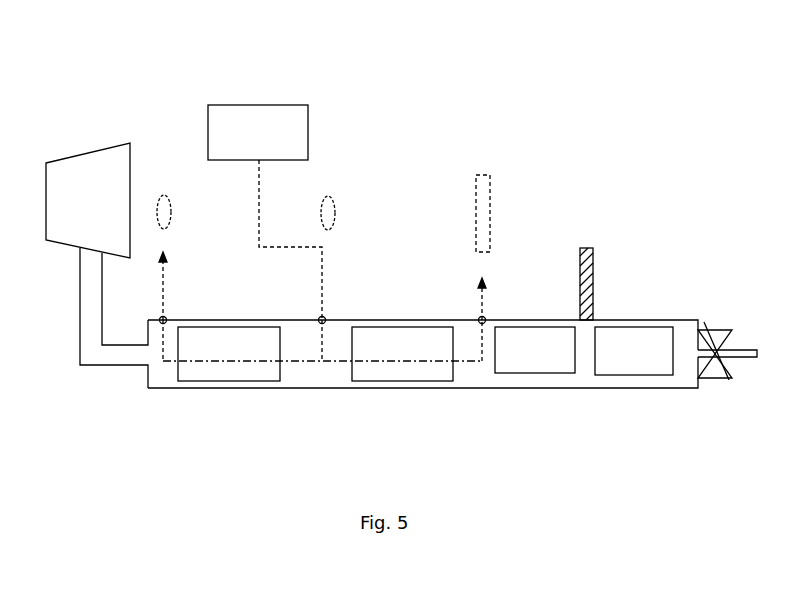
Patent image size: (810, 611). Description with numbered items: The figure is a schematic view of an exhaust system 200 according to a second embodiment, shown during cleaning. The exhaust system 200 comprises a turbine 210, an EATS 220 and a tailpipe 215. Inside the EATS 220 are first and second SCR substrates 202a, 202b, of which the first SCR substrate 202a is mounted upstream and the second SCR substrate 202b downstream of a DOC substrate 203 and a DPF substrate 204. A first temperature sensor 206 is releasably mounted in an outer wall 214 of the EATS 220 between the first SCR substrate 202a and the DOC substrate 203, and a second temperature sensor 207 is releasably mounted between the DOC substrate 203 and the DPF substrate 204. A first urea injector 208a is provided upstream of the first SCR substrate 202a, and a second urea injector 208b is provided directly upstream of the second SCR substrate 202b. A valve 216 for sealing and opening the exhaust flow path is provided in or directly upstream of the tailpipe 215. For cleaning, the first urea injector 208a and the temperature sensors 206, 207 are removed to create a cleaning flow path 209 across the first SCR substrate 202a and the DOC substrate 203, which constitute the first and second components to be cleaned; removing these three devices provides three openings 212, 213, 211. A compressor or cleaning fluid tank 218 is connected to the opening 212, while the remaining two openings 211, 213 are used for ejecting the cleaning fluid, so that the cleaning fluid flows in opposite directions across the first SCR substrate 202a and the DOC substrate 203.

The exhaust system 200 is at (82, 112).
The first SCR substrate 202a is at (265, 373).
The second SCR substrate 202b is at (640, 368).
The DOC substrate 203 is at (420, 375).
The DPF substrate 204 is at (538, 368).
The first temperature sensor 206 is at (330, 195).
The second temperature sensor 207 is at (487, 175).
The first urea injector 208a is at (162, 194).
The second urea injector 208b is at (593, 248).
The cleaning flow path 209 is at (205, 365).
The turbine 210 is at (78, 232).
The opening 211 is at (162, 317).
The opening 212 is at (320, 313).
The opening 213 is at (478, 312).
The outer wall 214 is at (353, 315).
The tailpipe 215 is at (737, 360).
The valve 216 is at (717, 330).
The compressor or cleaning fluid tank 218 is at (263, 113).
The EATS 220 is at (434, 170).